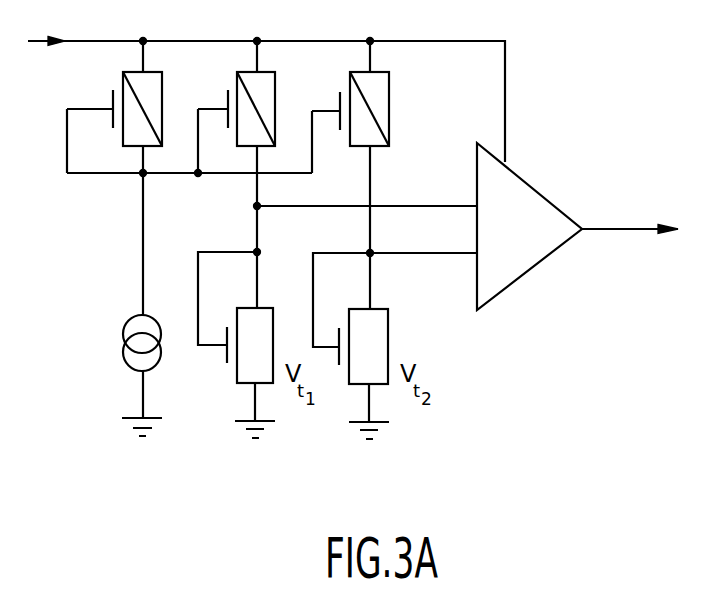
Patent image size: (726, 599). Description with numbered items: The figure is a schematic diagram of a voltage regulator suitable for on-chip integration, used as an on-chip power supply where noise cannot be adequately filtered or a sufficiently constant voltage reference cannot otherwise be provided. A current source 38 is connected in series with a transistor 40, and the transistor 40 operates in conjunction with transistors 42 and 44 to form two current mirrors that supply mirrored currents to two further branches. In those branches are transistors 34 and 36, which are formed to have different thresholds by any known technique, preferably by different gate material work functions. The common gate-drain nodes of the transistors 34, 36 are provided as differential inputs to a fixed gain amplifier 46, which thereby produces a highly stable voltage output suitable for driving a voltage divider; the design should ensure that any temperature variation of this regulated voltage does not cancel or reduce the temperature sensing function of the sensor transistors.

The transistor 34 is at (273, 325).
The transistor 36 is at (388, 352).
The current source 38 is at (124, 335).
The transistor 40 is at (123, 74).
The transistor 42 is at (237, 74).
The transistor 44 is at (350, 74).
The fixed gain amplifier 46 is at (533, 190).